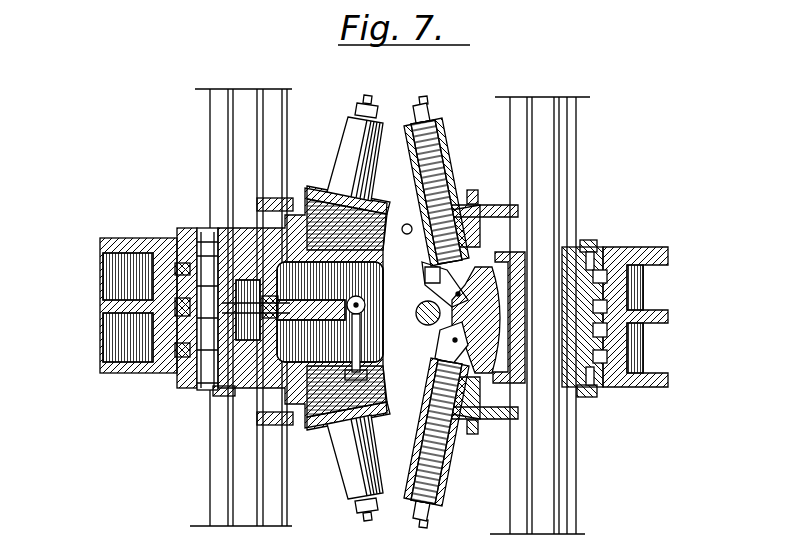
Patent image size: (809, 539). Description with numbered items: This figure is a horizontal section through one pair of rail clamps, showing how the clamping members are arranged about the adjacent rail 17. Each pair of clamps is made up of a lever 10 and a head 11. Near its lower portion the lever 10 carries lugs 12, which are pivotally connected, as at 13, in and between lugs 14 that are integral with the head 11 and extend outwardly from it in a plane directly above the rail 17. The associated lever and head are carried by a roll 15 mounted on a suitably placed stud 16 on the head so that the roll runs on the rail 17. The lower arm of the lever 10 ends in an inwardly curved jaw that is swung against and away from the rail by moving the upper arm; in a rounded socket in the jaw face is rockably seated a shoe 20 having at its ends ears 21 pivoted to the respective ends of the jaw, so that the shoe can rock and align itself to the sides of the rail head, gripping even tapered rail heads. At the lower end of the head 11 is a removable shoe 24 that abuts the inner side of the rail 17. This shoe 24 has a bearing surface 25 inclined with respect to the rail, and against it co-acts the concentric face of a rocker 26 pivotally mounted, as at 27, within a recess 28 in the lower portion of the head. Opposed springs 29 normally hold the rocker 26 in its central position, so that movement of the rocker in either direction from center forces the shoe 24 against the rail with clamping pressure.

The lever 10 is at (107, 335).
The head 11 is at (323, 295).
The lugs 12 is at (150, 283).
The pivotal connection 13 is at (203, 373).
The lugs 14 is at (176, 228).
The roll 15 is at (200, 245).
The stud 16 is at (221, 388).
The rail 17 is at (230, 485).
The shoe 20 is at (643, 333).
The ears 21 is at (603, 242).
The removable shoe 24 is at (518, 296).
The bearing surface 25 is at (508, 358).
The rocker 26 is at (487, 316).
The pivot 27 is at (370, 376).
The recess 28 is at (410, 250).
The springs 29 is at (442, 153).